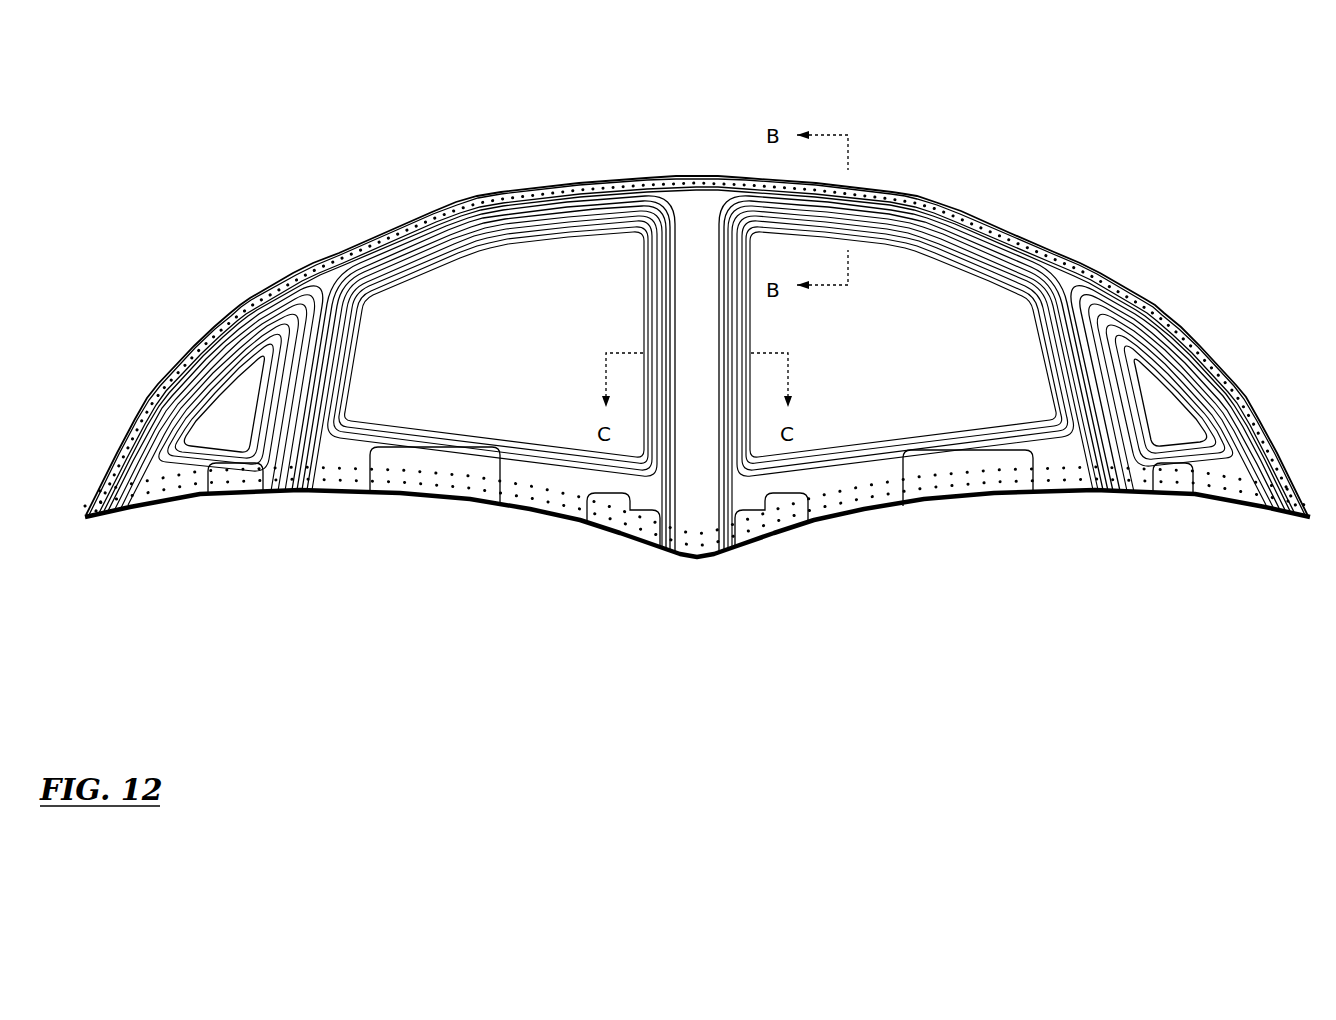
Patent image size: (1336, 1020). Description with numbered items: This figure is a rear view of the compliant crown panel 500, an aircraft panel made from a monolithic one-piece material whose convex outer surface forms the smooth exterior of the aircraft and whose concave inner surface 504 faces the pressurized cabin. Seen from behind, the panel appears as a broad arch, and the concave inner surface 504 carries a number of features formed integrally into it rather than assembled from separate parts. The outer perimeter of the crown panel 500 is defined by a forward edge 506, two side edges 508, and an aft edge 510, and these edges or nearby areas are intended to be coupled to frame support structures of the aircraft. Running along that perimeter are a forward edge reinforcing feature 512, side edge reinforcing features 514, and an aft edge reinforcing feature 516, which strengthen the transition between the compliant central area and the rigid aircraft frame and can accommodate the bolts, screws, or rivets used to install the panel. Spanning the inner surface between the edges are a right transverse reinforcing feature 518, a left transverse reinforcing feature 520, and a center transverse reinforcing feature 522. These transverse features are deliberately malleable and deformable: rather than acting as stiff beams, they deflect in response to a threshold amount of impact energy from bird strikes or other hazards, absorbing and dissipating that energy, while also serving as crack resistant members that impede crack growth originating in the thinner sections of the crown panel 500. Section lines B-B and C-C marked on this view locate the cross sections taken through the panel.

The compliant crown panel 500 is at (1251, 92).
The concave inner surface 504 is at (508, 335).
The forward edge 506 is at (145, 412).
The side edges 508 is at (1263, 420).
The aft edge 510 is at (348, 243).
The forward edge reinforcing feature 512 is at (177, 463).
The side edge reinforcing features 514 is at (168, 427).
The aft edge reinforcing feature 516 is at (230, 352).
The right transverse reinforcing feature 518 is at (1088, 317).
The left transverse reinforcing feature 520 is at (318, 335).
The center transverse reinforcing feature 522 is at (692, 310).